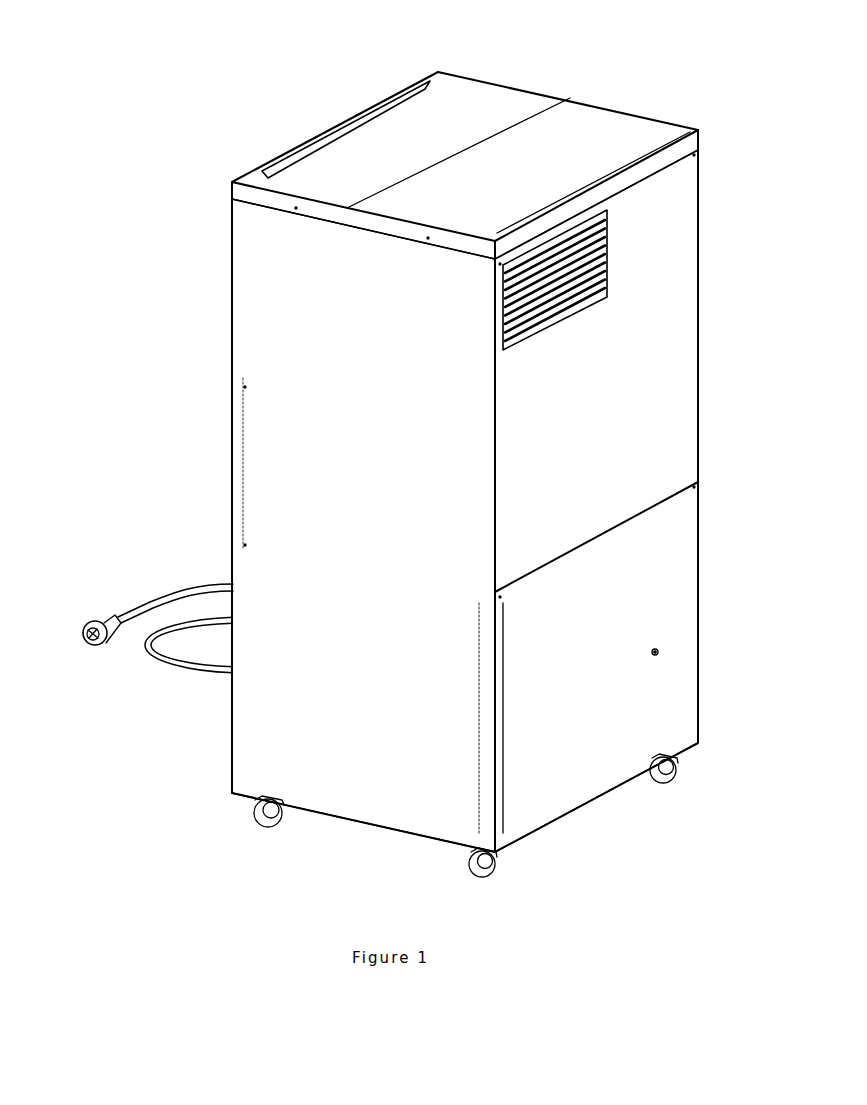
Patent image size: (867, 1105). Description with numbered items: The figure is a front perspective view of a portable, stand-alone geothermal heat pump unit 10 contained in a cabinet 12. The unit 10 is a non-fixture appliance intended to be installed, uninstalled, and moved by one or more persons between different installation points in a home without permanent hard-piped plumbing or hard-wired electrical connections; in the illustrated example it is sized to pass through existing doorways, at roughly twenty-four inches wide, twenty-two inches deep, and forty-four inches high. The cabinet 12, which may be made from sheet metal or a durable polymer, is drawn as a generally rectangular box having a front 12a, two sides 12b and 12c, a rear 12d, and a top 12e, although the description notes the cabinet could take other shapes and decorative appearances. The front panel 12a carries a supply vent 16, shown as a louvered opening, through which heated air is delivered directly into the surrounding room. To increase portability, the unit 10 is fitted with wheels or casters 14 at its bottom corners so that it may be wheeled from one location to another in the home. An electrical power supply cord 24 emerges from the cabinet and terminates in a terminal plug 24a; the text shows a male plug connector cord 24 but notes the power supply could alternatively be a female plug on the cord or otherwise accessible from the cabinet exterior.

The portable geothermal heat pump unit 10 is at (161, 166).
The cabinet 12 is at (438, 73).
The front panel 12a is at (665, 372).
The side 12b is at (358, 435).
The side 12c is at (570, 98).
The rear panel 12d is at (230, 355).
The top 12e is at (625, 133).
The casters 14 is at (266, 828).
The supply vent 16 is at (608, 250).
The electrical power supply cord 24 is at (168, 663).
The terminal plug 24a is at (83, 645).